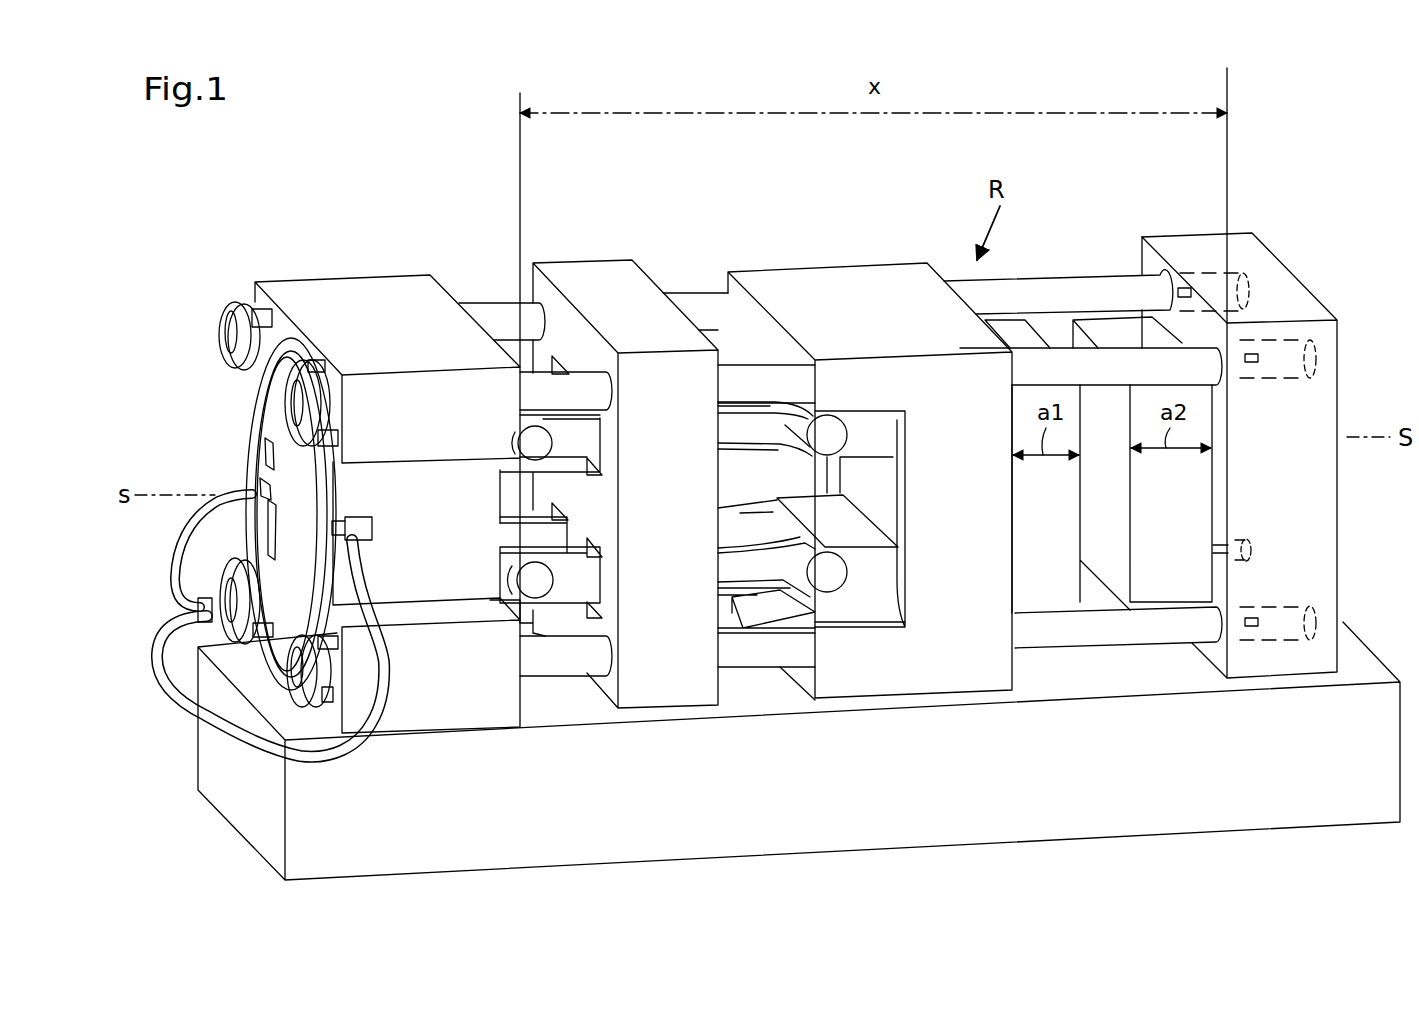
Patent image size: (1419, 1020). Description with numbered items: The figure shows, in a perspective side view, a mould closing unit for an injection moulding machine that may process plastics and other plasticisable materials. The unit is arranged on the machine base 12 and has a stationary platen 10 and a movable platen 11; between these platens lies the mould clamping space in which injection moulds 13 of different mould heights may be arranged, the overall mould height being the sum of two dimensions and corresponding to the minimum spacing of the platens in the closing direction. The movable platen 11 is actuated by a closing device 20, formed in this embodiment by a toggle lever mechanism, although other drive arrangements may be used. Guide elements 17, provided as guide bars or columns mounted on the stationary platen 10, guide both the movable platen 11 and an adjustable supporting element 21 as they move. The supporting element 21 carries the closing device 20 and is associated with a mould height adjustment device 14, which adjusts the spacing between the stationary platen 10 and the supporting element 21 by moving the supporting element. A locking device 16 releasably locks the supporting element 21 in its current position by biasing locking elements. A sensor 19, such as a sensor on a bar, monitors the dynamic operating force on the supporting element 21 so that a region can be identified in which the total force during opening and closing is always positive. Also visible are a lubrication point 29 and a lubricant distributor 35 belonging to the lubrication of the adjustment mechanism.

The stationary platen 10 is at (1263, 278).
The movable platen 11 is at (858, 300).
The machine base 12 is at (748, 790).
The injection mould 13 is at (1060, 553).
The mould height adjustment device 14 is at (203, 326).
The locking device 16 is at (333, 678).
The guide element 17 is at (1145, 370).
The sensor 19 is at (1258, 625).
The closing device 20 is at (578, 253).
The supporting element 21 is at (364, 292).
The lubrication point 29 is at (205, 600).
The lubricant distributor 35 is at (363, 522).